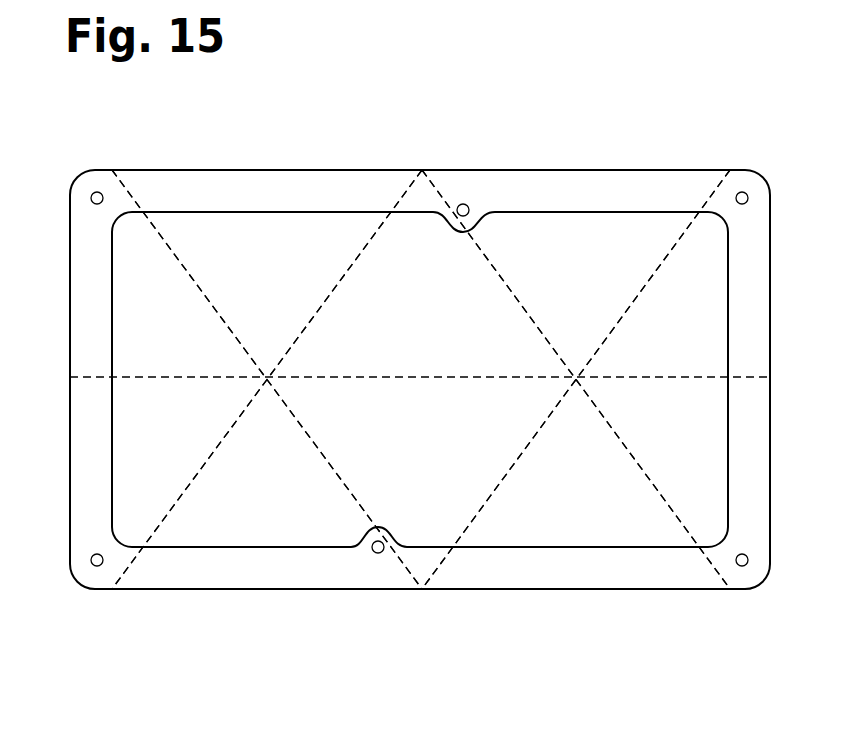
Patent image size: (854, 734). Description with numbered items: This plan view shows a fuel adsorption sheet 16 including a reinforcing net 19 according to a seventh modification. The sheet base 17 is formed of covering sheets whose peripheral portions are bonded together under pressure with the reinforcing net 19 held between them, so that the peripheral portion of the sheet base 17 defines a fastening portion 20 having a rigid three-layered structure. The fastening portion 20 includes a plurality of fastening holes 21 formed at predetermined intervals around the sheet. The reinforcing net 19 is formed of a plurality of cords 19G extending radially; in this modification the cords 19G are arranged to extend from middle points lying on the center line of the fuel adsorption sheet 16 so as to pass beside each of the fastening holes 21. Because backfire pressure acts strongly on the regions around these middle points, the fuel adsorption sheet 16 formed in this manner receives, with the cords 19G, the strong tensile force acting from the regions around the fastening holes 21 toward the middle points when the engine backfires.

The fuel adsorption sheet 16 is at (538, 170).
The sheet base 17 is at (288, 225).
The reinforcing net 19 is at (727, 174).
The cord 19G is at (345, 272).
The fastening portion 20 is at (629, 186).
The fastening hole 21 is at (91, 198).